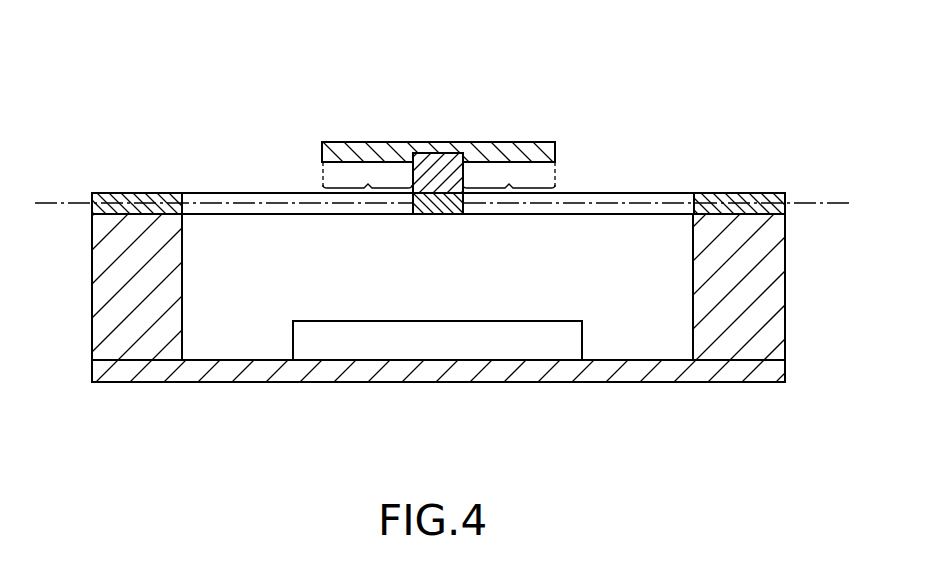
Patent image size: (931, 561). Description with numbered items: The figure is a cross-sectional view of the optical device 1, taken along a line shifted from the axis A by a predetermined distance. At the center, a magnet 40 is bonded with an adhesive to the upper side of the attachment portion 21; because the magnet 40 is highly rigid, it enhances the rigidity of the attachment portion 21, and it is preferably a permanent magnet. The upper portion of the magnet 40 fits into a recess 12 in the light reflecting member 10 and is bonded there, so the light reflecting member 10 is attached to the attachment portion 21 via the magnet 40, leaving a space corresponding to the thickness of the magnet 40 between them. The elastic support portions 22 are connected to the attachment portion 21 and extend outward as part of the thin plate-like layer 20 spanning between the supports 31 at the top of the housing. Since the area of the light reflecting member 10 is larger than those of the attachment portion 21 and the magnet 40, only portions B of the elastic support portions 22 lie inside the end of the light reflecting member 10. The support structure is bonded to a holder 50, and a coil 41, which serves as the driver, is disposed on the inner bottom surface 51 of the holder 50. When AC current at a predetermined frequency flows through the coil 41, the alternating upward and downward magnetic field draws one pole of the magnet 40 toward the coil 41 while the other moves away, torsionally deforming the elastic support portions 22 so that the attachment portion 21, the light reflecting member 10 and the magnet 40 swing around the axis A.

The optical device 1 is at (195, 85).
The light reflecting member 10 is at (520, 141).
The recess 12 is at (432, 152).
The membrane / thin layer 20 is at (289, 218).
The attachment portion 21 is at (440, 209).
The elastic support portions 22 is at (262, 198).
The support / spacer 31 is at (143, 194).
The magnet 40 is at (420, 170).
The coil 41 is at (506, 330).
The holder 50 is at (788, 293).
The inner bottom surface 51 is at (453, 383).
The axis A is at (71, 205).
The portions B is at (439, 175).